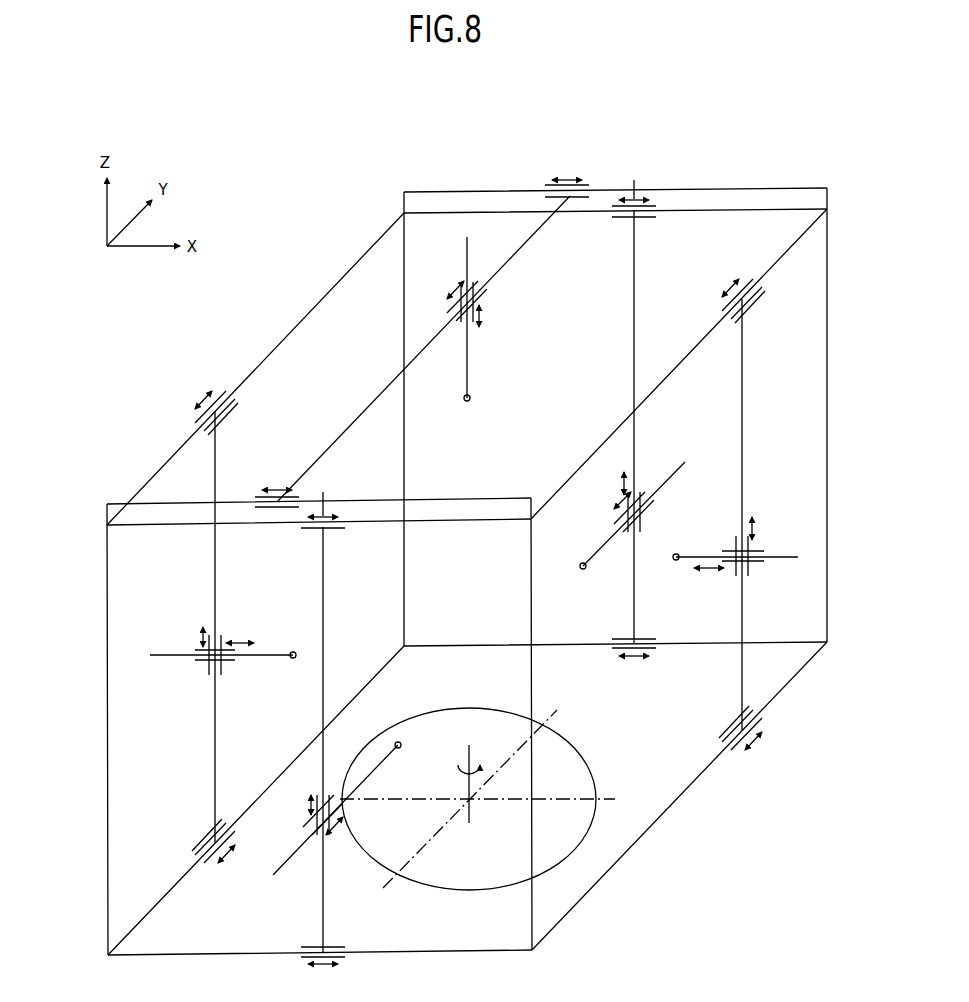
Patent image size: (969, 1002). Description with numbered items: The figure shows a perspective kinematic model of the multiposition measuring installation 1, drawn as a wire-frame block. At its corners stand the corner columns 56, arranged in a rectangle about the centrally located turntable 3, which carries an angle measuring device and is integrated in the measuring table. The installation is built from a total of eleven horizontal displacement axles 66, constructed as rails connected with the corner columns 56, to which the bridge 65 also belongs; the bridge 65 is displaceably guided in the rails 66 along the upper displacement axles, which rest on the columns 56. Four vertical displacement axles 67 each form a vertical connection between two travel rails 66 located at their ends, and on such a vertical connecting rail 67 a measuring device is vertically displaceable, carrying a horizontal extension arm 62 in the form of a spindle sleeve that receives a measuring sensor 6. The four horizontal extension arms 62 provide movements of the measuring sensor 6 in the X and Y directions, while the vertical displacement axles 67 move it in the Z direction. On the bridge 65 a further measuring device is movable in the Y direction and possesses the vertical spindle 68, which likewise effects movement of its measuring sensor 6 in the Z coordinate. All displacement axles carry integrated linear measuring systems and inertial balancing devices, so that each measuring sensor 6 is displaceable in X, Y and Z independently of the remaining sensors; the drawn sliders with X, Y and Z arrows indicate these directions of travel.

The multiposition measuring installation 1 is at (310, 285).
The turntable 3 is at (565, 762).
The measuring sensor 6 is at (465, 402).
The corner column 56 is at (404, 290).
The horizontal extension arm 62 is at (268, 650).
The bridge 65 is at (427, 345).
The horizontal displacement axle 66 is at (256, 369).
The vertical displacement axle 67 is at (215, 466).
The vertical spindle 68 is at (467, 383).